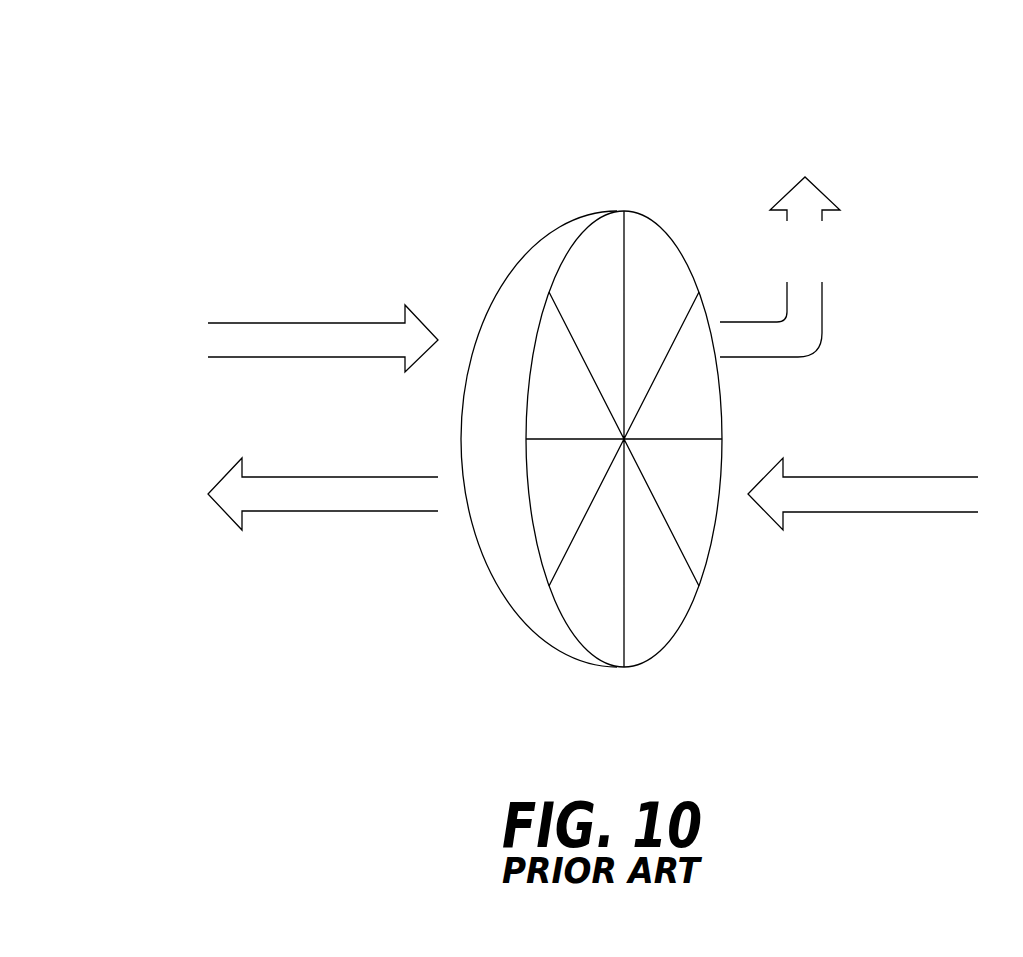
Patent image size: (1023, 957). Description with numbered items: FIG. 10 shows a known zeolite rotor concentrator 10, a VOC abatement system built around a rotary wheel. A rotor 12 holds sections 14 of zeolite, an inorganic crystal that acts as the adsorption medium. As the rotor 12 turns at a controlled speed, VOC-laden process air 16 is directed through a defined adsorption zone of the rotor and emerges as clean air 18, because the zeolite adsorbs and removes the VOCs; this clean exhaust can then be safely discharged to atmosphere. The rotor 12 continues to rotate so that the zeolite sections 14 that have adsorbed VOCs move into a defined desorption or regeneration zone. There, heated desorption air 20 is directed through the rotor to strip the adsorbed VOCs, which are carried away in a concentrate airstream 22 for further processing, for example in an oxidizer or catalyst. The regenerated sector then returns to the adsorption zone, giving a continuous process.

The zeolite rotor concentrator 10 is at (640, 88).
The rotor 12 is at (683, 622).
The sections of zeolite 14 is at (572, 478).
The process air 16 is at (327, 322).
The clean air 18 is at (823, 292).
The heated desorption air 20 is at (938, 477).
The concentrate airstream 22 is at (327, 477).